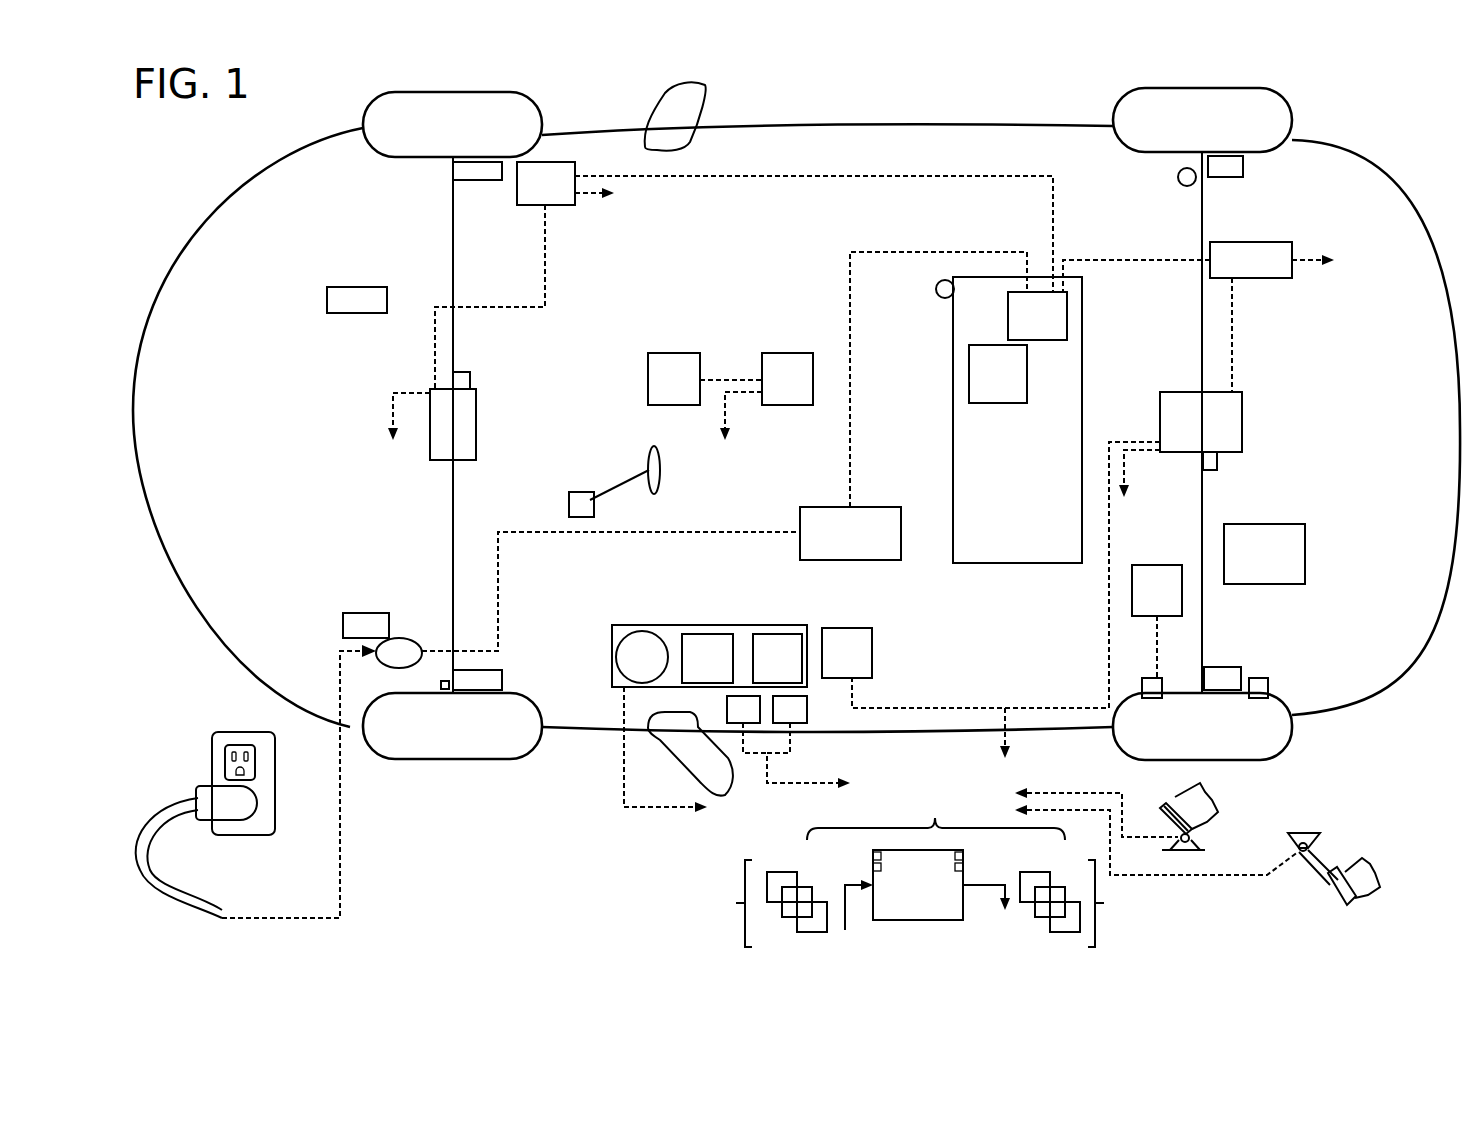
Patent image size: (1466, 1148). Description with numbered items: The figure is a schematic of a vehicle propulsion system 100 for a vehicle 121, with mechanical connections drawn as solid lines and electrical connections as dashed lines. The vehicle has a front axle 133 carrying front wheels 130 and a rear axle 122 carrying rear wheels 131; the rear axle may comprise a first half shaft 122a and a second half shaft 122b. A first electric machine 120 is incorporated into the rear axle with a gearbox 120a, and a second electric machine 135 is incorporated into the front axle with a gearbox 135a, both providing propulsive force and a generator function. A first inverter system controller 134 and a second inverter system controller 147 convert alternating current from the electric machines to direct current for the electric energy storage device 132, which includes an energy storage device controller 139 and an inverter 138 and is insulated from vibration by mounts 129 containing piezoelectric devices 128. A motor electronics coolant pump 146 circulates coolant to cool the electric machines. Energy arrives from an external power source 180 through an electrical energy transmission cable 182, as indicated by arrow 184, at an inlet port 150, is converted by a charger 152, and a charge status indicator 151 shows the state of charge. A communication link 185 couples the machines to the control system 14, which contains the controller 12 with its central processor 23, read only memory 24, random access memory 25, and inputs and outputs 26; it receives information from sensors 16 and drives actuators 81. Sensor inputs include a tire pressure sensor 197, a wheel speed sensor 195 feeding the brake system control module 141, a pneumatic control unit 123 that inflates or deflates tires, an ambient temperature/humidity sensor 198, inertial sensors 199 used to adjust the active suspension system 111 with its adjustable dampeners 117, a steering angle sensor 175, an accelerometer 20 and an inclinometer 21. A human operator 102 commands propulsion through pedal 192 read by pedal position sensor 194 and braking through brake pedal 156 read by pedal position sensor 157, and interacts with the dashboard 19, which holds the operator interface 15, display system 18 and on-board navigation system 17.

The vehicle propulsion system 100 is at (944, 100).
The front wheels 130 is at (466, 92).
The rear wheels 131 is at (1240, 88).
The front axle 133 is at (438, 499).
The rear axle 122 is at (1240, 230).
The first half shaft 122a is at (1203, 212).
The second half shaft 122b is at (1203, 625).
The adjustable dampeners 117 is at (481, 181).
The second inverter system controller 147 is at (744, 275).
The motor electronics coolant pump 146 is at (357, 300).
The second electric machine 135 is at (429, 440).
The transmission or gearbox 135a is at (466, 372).
The charge status indicator 151 is at (366, 625).
The inlet port 150 is at (402, 638).
The piezoelectric devices 128 is at (441, 685).
The mounts 129 is at (942, 299).
The steering angle sensor 175 is at (585, 492).
The active suspension system 111 is at (705, 379).
The inertial sensors 199 is at (763, 422).
The charger 152 is at (913, 406).
The electric energy storage device 132 is at (1017, 420).
The inverter 138 is at (1037, 316).
The electric energy storage device controller 139 is at (998, 374).
The first inverter system controller 134 is at (1210, 317).
The first electric machine 120 is at (1047, 550).
The transmission or gearbox 120a is at (1217, 470).
The brake system control module 141 is at (1264, 554).
The pneumatic control unit 123 is at (1157, 621).
The tire pressure sensor 197 is at (1160, 678).
The wheel speed sensor 195 is at (1262, 678).
The communication link 185 is at (1082, 708).
The dashboard 19 is at (709, 700).
The operator interface 15 is at (642, 657).
The display system 18 is at (707, 658).
The on-board navigation system 17 is at (741, 625).
The ambient temperature/humidity sensor 198 is at (847, 653).
The inclinometer 21 is at (747, 724).
The accelerometer 20 is at (808, 742).
The control system 14 is at (1052, 852).
The controller 12 is at (921, 879).
The central processor 23 is at (873, 855).
The read only memory 24 is at (873, 867).
The random access memory 25 is at (963, 855).
The inputs and outputs 26 is at (963, 867).
The sensors 16 is at (745, 903).
The actuators 81 is at (1106, 903).
The power source 180 is at (205, 760).
The electrical energy transmission cable 182 is at (141, 825).
The arrow 184 is at (274, 918).
The pedal 192 is at (1182, 810).
The pedal position sensor 194 is at (1192, 836).
The human operator 102 is at (1192, 805).
The pedal position sensor 157 is at (1307, 861).
The brake pedal 156 is at (1331, 897).
The vehicle 121 is at (1412, 724).